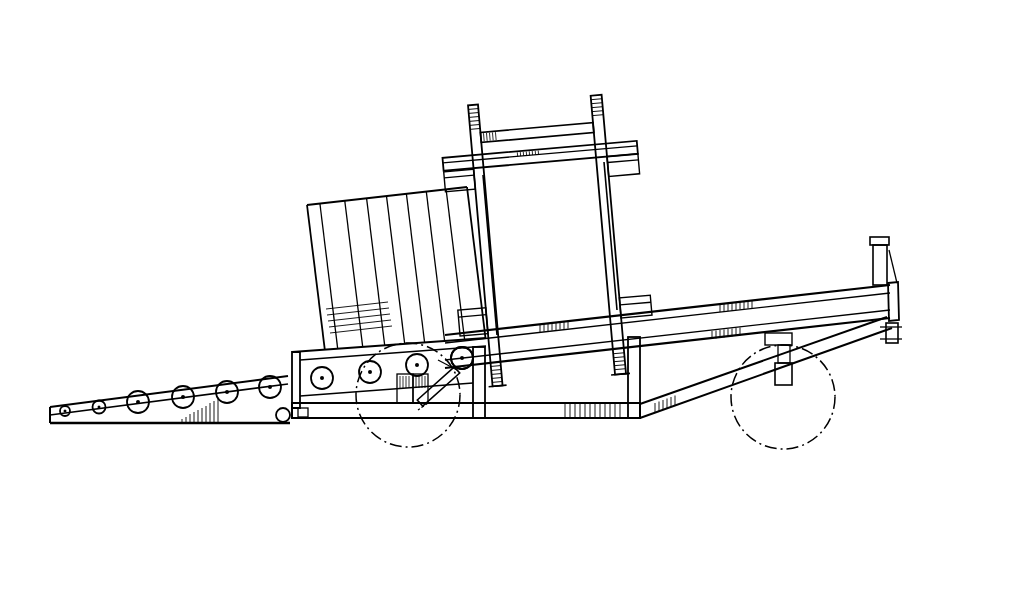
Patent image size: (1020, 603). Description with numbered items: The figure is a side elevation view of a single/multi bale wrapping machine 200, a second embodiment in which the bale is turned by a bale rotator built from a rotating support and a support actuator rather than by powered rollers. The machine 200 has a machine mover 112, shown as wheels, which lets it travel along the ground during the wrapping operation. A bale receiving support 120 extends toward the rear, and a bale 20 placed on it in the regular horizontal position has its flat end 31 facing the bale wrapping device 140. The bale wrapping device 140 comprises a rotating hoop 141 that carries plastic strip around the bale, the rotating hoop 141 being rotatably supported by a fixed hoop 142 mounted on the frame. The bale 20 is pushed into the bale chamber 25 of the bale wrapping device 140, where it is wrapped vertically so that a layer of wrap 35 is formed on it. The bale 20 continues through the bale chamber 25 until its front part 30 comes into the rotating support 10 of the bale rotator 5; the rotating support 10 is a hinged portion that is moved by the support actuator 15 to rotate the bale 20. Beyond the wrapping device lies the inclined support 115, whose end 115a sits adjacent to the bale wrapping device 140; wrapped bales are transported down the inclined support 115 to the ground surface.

The bale wrapping machine 200 is at (762, 164).
The bale wrapping device 140 is at (501, 84).
The rotating hoop 141 is at (601, 103).
The fixed hoop 142 is at (468, 119).
The bale chamber 25 is at (562, 56).
The bale 20 is at (376, 190).
The layer of wrap 35 is at (310, 217).
The flat end 31 is at (309, 262).
The front part 30 is at (483, 225).
The bale rotator 5 is at (412, 318).
The rotating support 10 is at (388, 370).
The support actuator 15 is at (440, 378).
The inclined support 115 is at (197, 386).
The end of the inclined support 115a is at (493, 364).
The machine mover 112 is at (401, 447).
The bale receiving support 120 is at (792, 297).